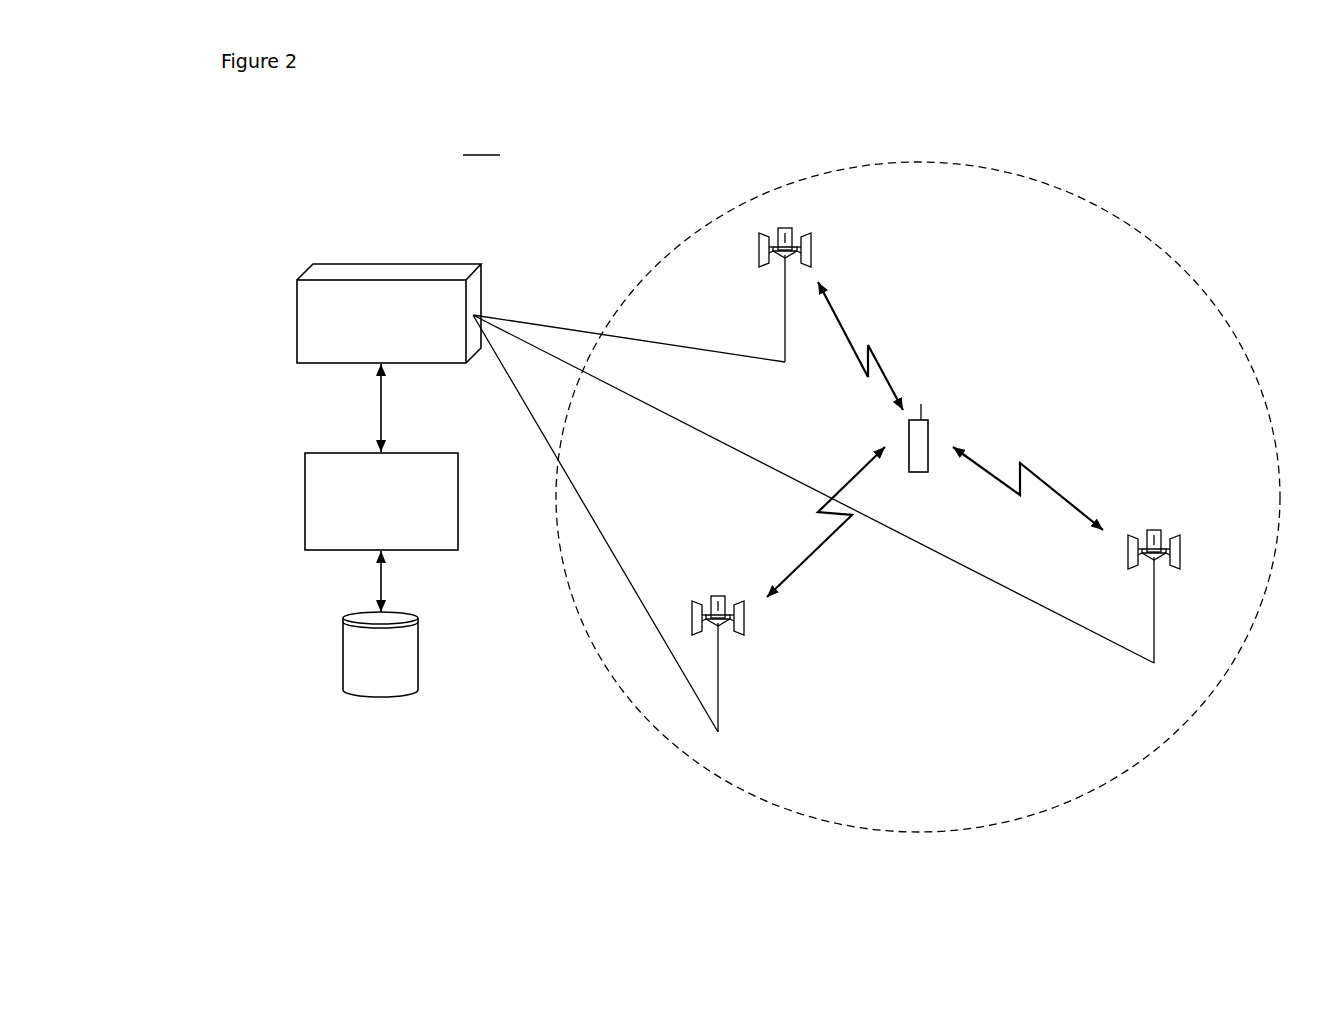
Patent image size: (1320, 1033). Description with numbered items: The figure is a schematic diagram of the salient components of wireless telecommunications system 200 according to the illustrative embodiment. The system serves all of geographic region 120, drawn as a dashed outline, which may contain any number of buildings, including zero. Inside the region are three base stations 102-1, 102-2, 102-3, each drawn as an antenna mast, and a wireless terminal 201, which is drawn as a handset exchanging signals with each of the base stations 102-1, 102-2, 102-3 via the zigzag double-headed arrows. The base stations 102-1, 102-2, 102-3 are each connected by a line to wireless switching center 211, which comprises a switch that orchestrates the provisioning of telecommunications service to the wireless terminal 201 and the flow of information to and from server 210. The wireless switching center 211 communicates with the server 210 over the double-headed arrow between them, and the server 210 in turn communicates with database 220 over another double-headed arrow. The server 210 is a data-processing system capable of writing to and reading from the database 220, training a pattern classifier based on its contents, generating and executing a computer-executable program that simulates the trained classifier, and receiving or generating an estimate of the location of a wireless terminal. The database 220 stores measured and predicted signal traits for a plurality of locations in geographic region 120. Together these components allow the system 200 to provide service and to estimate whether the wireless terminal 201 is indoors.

The wireless telecommunications system 200 is at (481, 145).
The geographic region 120 is at (917, 161).
The wireless switching center 211 is at (381, 270).
The server 210 is at (415, 452).
The database 220 is at (403, 618).
The base station 102-1 is at (785, 302).
The base station 102-2 is at (718, 672).
The base station 102-3 is at (1154, 605).
The wireless terminal 201 is at (927, 428).